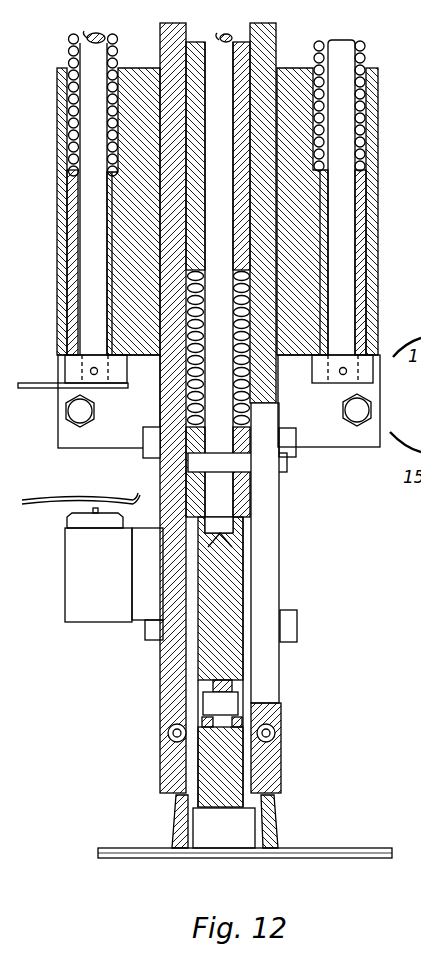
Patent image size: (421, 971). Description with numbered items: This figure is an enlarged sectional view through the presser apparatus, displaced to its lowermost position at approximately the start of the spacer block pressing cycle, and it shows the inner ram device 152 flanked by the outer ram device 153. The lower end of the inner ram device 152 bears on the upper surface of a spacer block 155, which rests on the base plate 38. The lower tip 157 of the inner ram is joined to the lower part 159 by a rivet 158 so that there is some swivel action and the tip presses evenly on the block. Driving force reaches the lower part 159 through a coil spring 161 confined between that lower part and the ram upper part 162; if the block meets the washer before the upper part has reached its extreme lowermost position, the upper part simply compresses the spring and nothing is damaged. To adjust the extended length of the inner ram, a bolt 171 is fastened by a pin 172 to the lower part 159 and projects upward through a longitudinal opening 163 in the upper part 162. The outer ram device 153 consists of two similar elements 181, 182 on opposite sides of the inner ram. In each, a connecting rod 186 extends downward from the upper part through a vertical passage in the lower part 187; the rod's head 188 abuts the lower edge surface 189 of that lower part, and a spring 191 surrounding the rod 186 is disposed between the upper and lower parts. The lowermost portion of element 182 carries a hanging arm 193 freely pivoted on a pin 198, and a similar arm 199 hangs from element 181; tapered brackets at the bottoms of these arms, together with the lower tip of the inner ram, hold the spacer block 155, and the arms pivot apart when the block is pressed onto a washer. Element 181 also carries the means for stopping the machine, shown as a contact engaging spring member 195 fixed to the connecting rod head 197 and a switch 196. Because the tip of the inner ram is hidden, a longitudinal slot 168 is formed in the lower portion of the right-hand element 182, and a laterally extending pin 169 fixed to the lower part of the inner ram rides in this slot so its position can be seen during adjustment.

The base plate 38 is at (145, 853).
The inner ram device 152 is at (212, 650).
The outer ram device 153 is at (160, 708).
The spacer block 155 is at (234, 853).
The lower tip 157 is at (228, 808).
The rivet 158 is at (242, 700).
The lower part 159 is at (245, 663).
The coil spring 161 is at (252, 416).
The ram upper part 162 is at (230, 38).
The longitudinal opening 163 is at (271, 53).
The slot 168 is at (278, 548).
The pin 169 is at (284, 470).
The bolt 171 is at (187, 42).
The pin 172 is at (217, 468).
The outer ram element 181 is at (104, 446).
The outer ram element 182 is at (343, 446).
The connecting rod 186 is at (341, 45).
The lower part 187 is at (378, 233).
The head 188 is at (341, 396).
The lower edge surface 189 is at (312, 358).
The spring 191 is at (364, 63).
The hanging arm 193 is at (281, 823).
The contact engaging spring member 195 is at (43, 389).
The switch 196 is at (97, 524).
The connecting rod head 197 is at (128, 388).
The pin 198 is at (282, 735).
The hanging arm 199 is at (173, 823).